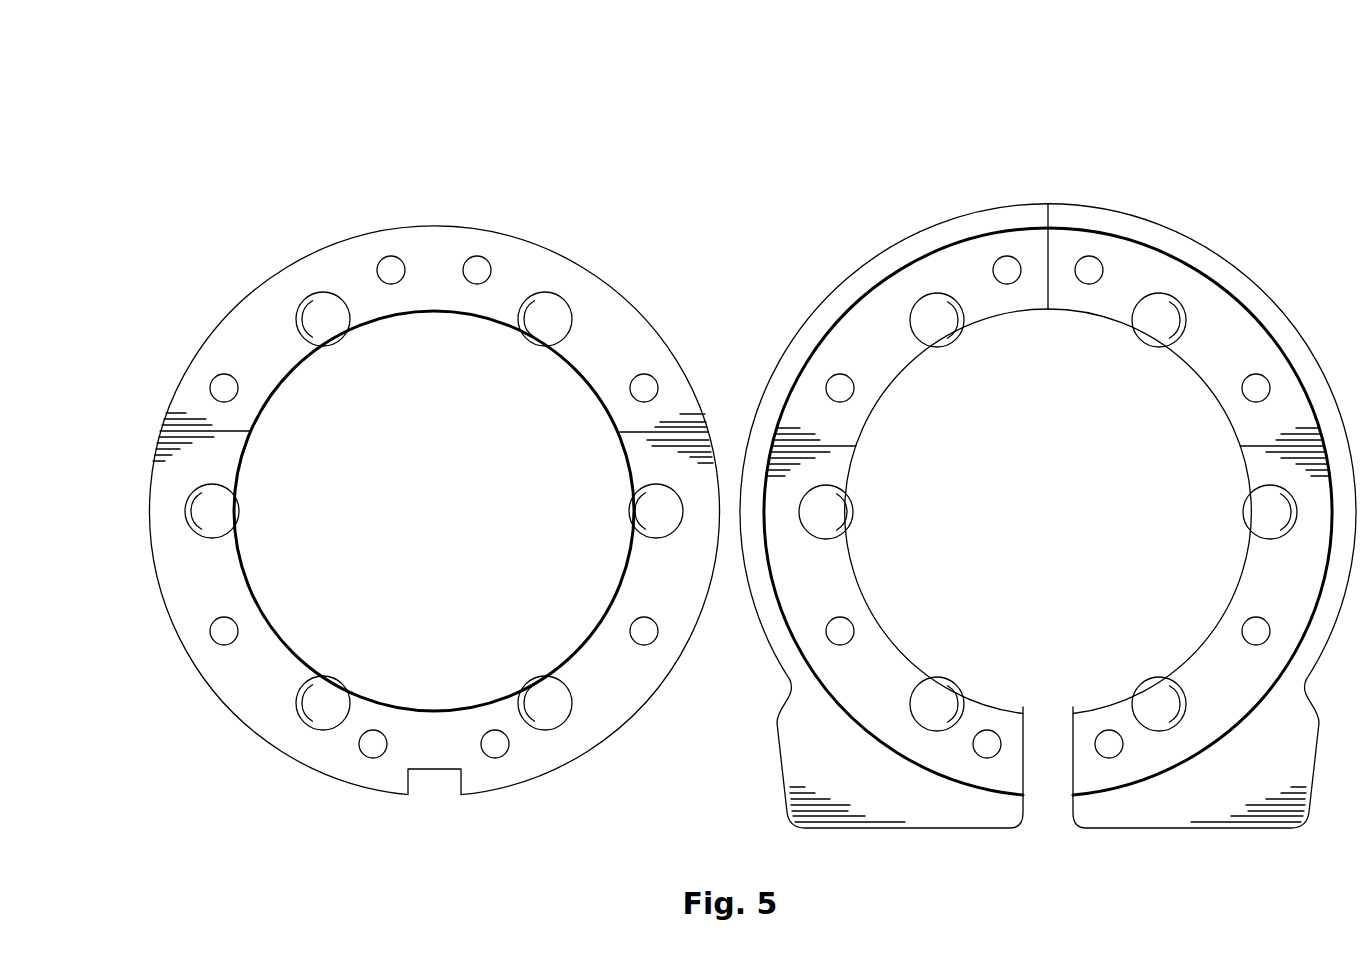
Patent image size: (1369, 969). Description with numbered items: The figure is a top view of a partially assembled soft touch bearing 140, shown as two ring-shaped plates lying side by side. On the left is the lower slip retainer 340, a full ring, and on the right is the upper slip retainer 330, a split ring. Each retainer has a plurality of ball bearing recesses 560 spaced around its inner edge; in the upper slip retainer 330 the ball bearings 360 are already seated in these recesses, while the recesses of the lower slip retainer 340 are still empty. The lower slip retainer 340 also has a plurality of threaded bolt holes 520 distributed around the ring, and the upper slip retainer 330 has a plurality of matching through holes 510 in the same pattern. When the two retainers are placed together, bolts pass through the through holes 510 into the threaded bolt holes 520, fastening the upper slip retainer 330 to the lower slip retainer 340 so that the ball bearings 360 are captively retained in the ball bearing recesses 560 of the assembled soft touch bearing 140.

The soft touch bearing 140 is at (345, 85).
The lower slip retainer 340 is at (290, 268).
The upper slip retainer 330 is at (1250, 277).
The threaded bolt holes 520 is at (391, 268).
The ball bearing recesses 560 is at (333, 333).
The through holes 510 is at (1007, 268).
The ball bearings 360 is at (956, 340).